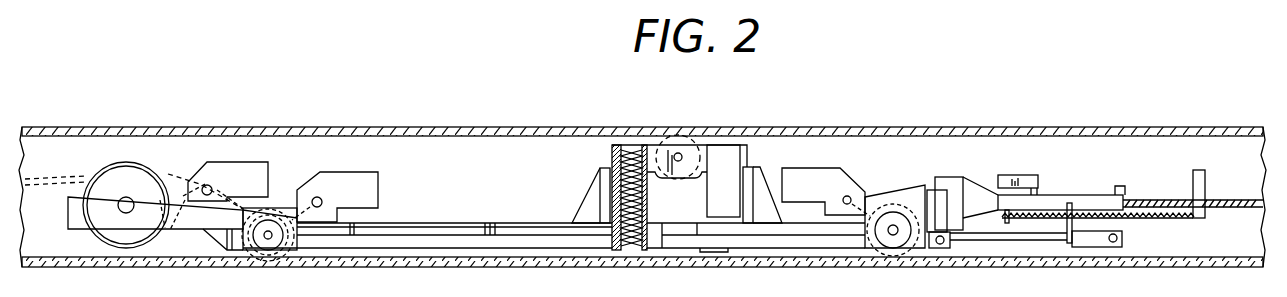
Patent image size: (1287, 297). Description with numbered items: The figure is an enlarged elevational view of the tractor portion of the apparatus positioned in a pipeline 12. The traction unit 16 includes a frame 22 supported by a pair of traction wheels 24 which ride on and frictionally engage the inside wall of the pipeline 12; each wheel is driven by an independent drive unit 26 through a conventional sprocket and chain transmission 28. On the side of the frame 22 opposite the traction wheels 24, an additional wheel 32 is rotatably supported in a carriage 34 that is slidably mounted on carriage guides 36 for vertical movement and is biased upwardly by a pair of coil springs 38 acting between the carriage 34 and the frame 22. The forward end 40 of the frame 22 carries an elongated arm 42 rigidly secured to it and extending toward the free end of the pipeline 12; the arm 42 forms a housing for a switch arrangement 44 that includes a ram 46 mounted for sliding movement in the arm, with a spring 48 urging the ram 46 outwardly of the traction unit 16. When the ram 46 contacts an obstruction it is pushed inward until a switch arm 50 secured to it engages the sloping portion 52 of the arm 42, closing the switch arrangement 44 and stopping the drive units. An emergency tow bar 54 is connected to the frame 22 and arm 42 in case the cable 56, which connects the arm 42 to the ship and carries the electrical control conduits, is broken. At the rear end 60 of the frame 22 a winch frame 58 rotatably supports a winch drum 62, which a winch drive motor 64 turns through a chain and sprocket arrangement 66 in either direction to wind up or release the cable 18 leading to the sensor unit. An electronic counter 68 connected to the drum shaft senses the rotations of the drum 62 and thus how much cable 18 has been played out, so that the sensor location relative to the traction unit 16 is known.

The pipeline 12 is at (543, 106).
The traction unit 16 is at (613, 108).
The cable 18 is at (56, 173).
The frame 22 is at (487, 208).
The traction wheels 24 is at (277, 257).
The drive units 26 is at (359, 179).
The sprocket and chain transmissions 28 is at (291, 183).
The wheel 32 is at (689, 138).
The carriage 34 is at (729, 149).
The carriage guides 36 is at (590, 188).
The coil springs 38 is at (642, 208).
The forward end 40 is at (941, 245).
The arm 42 is at (978, 198).
The switch arrangement 44 is at (1073, 173).
The ram 46 is at (1199, 177).
The spring 48 is at (1163, 217).
The switch arm 50 is at (1031, 180).
The sloping portion 52 is at (975, 178).
The emergency tow bar 54 is at (1097, 243).
The cable 56 is at (1238, 205).
The winch frame 58 is at (174, 237).
The rear end 60 is at (232, 243).
The winch drum 62 is at (118, 178).
The winch drive motor 64 is at (248, 172).
The chain and sprocket arrangement 66 is at (182, 172).
The electronic counter 68 is at (128, 197).